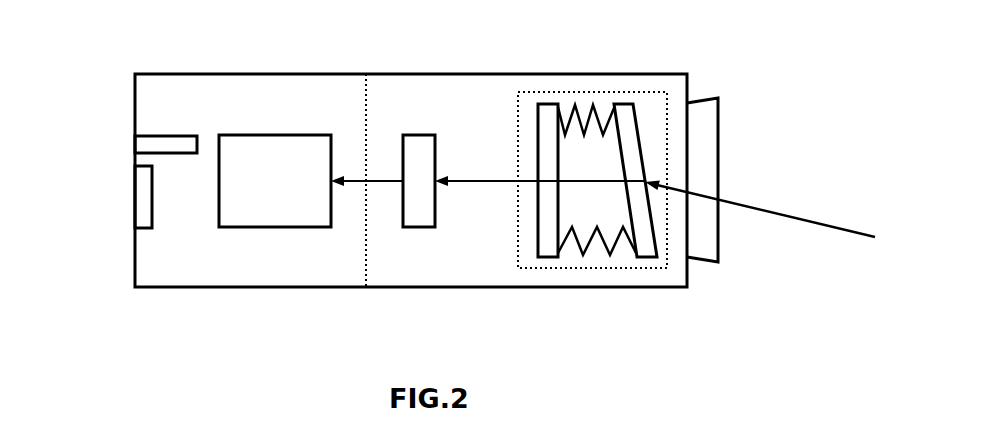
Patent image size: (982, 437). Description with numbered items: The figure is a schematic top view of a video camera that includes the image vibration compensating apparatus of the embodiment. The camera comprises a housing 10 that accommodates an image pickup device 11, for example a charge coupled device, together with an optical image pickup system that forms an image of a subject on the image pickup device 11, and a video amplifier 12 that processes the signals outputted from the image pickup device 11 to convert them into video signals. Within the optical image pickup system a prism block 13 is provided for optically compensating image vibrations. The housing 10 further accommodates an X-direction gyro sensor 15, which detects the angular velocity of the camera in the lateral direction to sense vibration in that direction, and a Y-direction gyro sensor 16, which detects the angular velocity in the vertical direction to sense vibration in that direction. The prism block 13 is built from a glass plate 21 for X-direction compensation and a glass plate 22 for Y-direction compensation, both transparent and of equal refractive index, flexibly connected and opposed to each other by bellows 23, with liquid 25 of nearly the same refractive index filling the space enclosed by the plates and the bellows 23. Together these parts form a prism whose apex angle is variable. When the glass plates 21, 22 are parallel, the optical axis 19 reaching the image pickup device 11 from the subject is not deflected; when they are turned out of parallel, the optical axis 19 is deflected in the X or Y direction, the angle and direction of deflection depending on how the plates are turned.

The housing 10 is at (240, 74).
The image pickup device 11 is at (425, 227).
The video amplifier 12 is at (270, 227).
The prism block 13 is at (620, 92).
The X-direction gyro sensor 15 is at (135, 142).
The Y-direction gyro sensor 16 is at (135, 208).
The optical axis 19 is at (808, 218).
The glass plate for X-direction compensation 21 is at (647, 257).
The glass plate for Y-direction compensation 22 is at (545, 257).
The bellows 23 is at (593, 243).
The liquid 25 is at (585, 210).